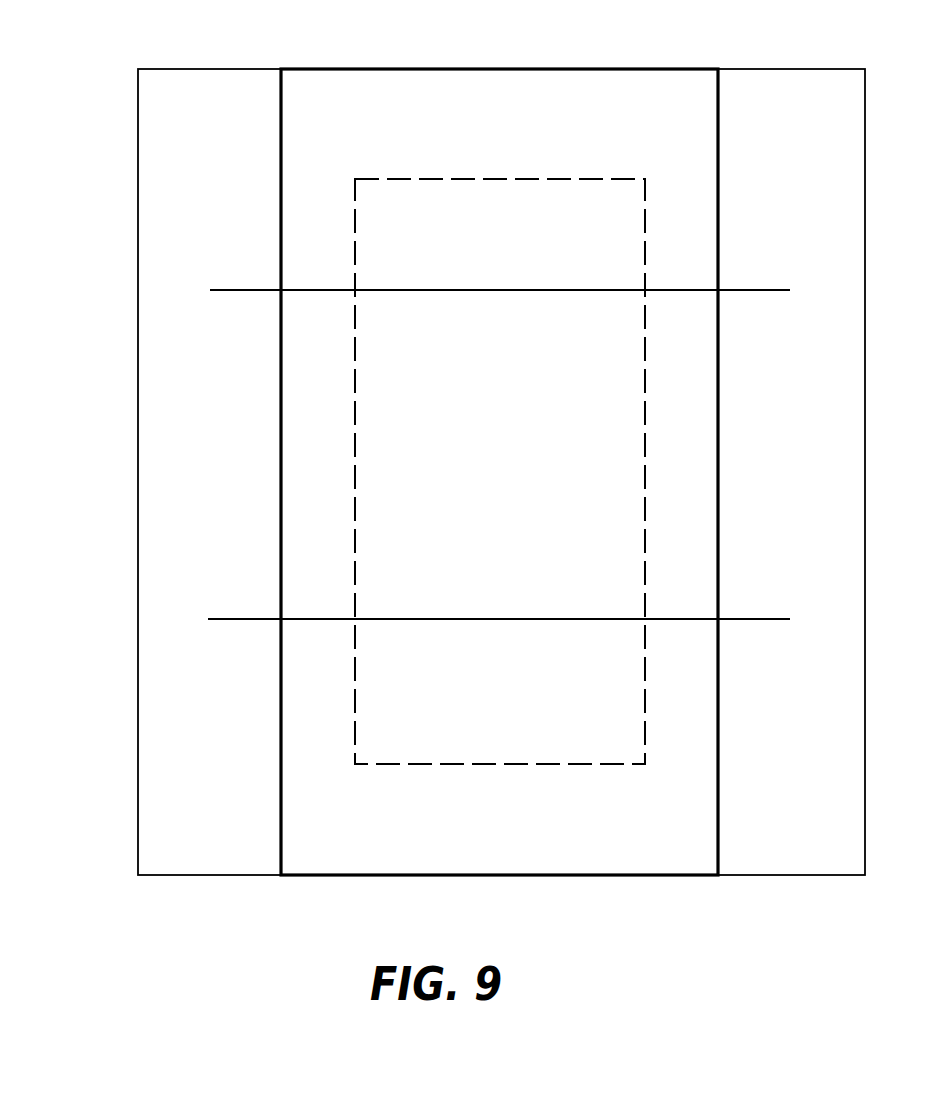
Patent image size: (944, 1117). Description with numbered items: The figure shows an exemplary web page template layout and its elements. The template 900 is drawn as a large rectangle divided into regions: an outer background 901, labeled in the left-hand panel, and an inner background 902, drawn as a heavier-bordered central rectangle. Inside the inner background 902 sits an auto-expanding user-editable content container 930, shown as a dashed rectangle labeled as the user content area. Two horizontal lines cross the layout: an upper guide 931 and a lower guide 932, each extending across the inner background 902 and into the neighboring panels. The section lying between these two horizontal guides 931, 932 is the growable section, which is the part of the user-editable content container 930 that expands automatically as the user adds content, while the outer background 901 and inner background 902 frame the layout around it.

The template 900 is at (138, 138).
The outer background 901 is at (175, 218).
The inner background 902 is at (645, 107).
The auto-expanding user-editable content container 930 is at (355, 521).
The upper guide 931 is at (247, 290).
The lower guide 932 is at (246, 618).